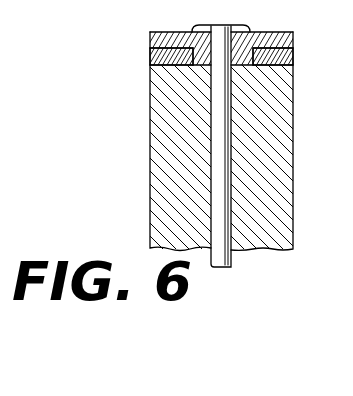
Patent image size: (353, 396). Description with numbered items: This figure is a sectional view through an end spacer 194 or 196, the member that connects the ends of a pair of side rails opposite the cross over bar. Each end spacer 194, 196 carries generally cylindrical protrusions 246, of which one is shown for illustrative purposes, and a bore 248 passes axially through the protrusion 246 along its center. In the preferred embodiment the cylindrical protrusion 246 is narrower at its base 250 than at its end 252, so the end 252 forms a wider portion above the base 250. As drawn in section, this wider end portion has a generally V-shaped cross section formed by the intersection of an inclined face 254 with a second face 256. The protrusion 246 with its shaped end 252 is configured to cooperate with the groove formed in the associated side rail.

The end spacer 194 is at (176, 141).
The end spacer 196 is at (150, 146).
The inclined face 254 is at (190, 45).
The base 250 is at (165, 57).
The end 252 is at (270, 47).
The cylindrical protrusion 246 is at (285, 62).
The bore 248 is at (234, 250).
The face 256 is at (190, 32).